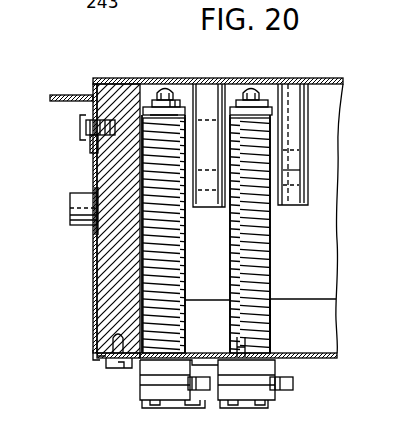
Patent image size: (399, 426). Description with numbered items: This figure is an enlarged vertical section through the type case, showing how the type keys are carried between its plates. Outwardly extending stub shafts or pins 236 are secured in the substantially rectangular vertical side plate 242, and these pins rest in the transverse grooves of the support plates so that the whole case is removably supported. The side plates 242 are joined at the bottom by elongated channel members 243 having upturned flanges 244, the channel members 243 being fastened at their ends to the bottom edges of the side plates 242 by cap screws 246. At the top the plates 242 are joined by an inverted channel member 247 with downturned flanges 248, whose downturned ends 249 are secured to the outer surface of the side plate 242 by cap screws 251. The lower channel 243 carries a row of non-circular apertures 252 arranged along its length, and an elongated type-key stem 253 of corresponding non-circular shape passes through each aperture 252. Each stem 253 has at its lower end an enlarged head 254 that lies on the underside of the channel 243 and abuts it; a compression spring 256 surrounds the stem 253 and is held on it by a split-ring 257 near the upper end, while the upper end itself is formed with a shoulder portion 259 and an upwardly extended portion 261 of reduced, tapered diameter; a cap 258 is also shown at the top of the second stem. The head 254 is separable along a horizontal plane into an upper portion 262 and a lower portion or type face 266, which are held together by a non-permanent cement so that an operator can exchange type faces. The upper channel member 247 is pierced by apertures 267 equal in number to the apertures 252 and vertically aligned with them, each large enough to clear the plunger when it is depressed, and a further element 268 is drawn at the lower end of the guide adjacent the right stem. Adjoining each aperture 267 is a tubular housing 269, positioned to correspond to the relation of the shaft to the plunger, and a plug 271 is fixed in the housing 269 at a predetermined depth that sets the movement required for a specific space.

The stub shaft or pin 236 is at (72, 205).
The side plate 242 is at (100, 303).
The channel member 243 is at (96, 351).
The upturned flange 244 is at (323, 318).
The cap screw 246 is at (125, 368).
The inverted channel member 247 is at (143, 79).
The downturned flange 248 is at (325, 102).
The downturned end 249 is at (93, 89).
The cap screw 251 is at (152, 100).
The non-circular aperture 252 is at (237, 340).
The type-key stem 253 is at (284, 272).
The enlarged head 254 is at (258, 378).
The compression spring 256 is at (272, 302).
The split-ring 257 is at (157, 105).
The cap 258 is at (214, 81).
The shoulder portion 259 is at (173, 107).
The upwardly extended portion 261 is at (165, 88).
The upper portion 262 is at (367, 296).
The type face 266 is at (275, 400).
The aperture 267 is at (207, 207).
The guide channel 268 is at (294, 207).
The tubular housing 269 is at (288, 98).
The plug 271 is at (300, 170).